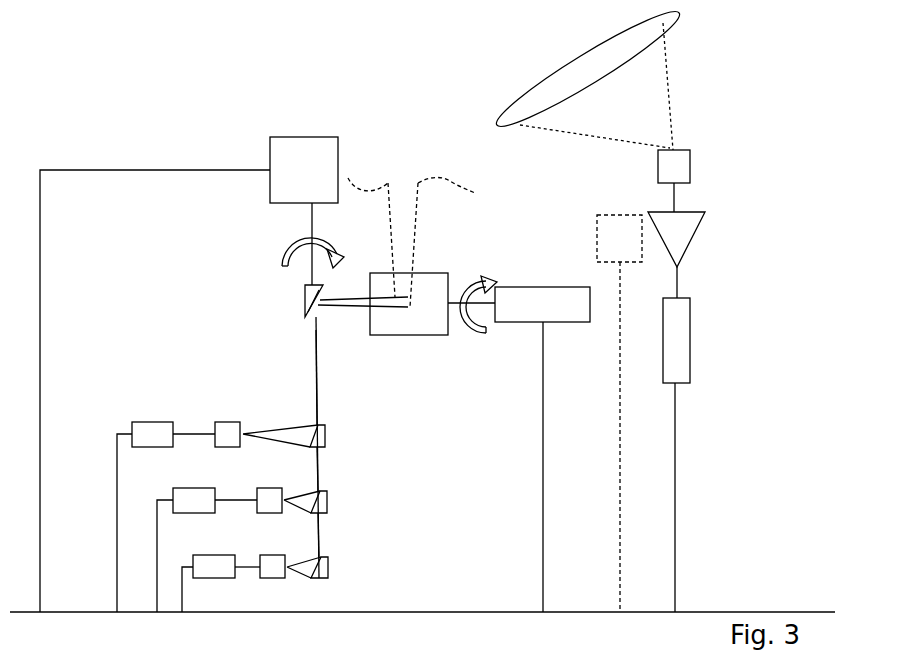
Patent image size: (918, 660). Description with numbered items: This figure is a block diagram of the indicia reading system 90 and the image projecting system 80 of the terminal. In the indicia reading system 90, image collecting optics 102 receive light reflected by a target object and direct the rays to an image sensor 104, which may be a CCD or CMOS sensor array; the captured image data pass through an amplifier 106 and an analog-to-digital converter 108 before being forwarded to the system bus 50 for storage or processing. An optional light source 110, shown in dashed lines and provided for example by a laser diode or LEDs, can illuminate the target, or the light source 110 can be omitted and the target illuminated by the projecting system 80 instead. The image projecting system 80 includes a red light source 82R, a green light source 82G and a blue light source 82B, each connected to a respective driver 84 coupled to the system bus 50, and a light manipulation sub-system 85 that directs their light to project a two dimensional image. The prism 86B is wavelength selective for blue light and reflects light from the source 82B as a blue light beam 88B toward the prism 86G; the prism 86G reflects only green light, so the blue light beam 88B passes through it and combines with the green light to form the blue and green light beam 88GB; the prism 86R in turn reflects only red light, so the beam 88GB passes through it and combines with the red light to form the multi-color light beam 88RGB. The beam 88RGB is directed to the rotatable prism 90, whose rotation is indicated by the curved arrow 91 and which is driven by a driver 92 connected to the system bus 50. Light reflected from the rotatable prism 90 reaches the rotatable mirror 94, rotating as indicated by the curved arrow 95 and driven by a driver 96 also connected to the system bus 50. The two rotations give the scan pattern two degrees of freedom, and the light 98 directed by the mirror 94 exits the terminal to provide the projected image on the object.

The system bus 50 is at (727, 612).
The image projecting system 80 is at (219, 99).
The red light source 82R is at (228, 420).
The green light source 82G is at (268, 487).
The blue light source 82B is at (272, 552).
The driver 84 is at (152, 420).
The light manipulation sub-system 85 is at (561, 468).
The red reflecting prism 86R is at (328, 437).
The green reflecting prism 86G is at (329, 503).
The blue reflecting prism 86B is at (330, 563).
The multi-color light beam 88RGB is at (318, 383).
The blue and green light beam 88GB is at (322, 465).
The blue light beam 88B is at (322, 535).
The rotatable prism 90 is at (305, 287).
The curved arrow 91 is at (282, 252).
The driver 92 is at (305, 135).
The rotatable mirror 94 is at (440, 273).
The curved arrow 95 is at (467, 332).
The driver 96 is at (542, 287).
The light 98 is at (393, 243).
The image collecting optics 102 is at (550, 82).
The image sensor 104 is at (657, 167).
The amplifier 106 is at (693, 240).
The analog-to-digital converter 108 is at (690, 342).
The light source 110 is at (597, 218).